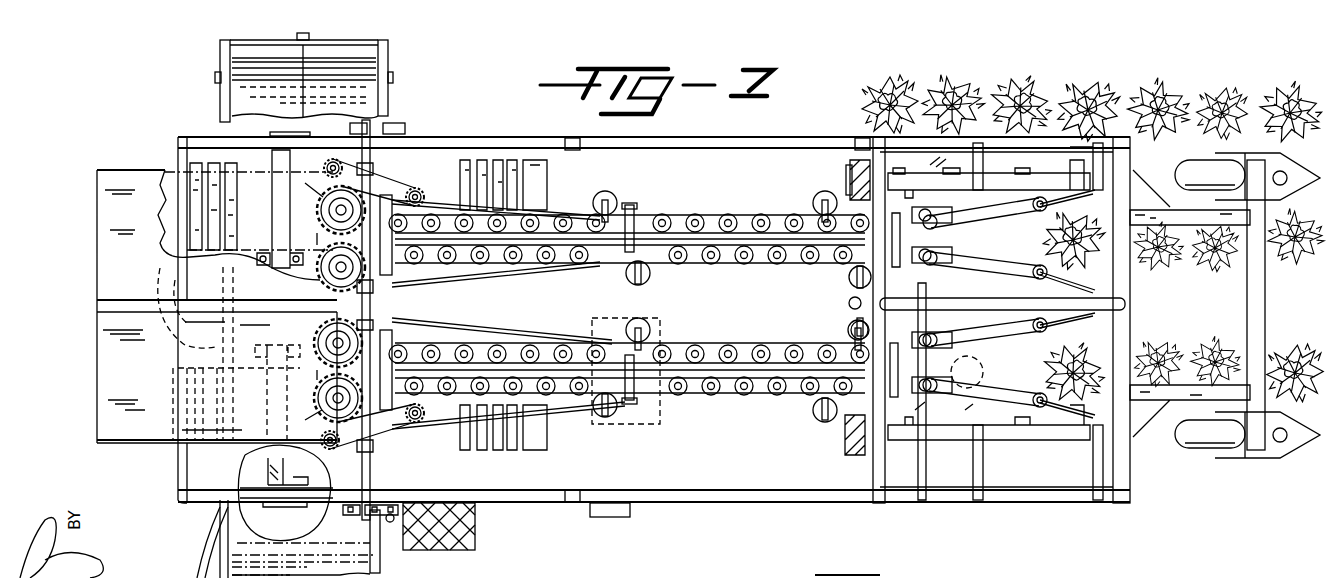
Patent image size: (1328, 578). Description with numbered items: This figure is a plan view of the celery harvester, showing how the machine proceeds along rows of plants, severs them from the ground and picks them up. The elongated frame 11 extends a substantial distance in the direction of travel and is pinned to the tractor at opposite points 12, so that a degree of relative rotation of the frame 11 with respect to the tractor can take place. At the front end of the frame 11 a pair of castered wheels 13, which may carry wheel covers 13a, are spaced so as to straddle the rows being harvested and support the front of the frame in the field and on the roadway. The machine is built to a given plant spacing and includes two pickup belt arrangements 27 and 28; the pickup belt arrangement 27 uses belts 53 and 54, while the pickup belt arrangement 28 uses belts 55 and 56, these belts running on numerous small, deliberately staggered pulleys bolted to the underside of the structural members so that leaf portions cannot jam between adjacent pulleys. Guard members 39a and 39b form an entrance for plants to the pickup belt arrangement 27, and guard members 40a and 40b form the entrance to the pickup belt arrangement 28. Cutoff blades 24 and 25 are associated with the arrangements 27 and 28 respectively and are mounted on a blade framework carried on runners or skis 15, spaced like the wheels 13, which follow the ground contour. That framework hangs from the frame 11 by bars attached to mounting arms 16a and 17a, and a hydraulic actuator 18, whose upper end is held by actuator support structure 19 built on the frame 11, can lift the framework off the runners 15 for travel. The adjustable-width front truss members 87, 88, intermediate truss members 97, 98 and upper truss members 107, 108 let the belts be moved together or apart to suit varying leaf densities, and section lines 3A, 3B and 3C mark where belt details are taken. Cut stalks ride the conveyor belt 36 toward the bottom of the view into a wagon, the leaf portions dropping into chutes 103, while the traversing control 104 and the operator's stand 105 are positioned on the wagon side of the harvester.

The frame 11 is at (787, 500).
The pinning points 12 is at (300, 126).
The castered wheels 13 is at (1180, 178).
The wheel covers 13a is at (1300, 458).
The runners or skis 15 is at (856, 160).
The mounting arm 16a is at (1098, 145).
The mounting arm 17a is at (978, 143).
The actuator 18 is at (852, 308).
The actuator support structure 19 is at (962, 305).
The cutoff blade 24 is at (925, 262).
The cutoff blade 25 is at (940, 402).
The pickup belt arrangement 27 is at (733, 228).
The pickup belt arrangement 28 is at (733, 375).
The conveyor belt 36 is at (242, 530).
The guard member 39a is at (1090, 196).
The guard member 39b is at (1090, 290).
The guard member 40a is at (1072, 333).
The guard member 40b is at (1052, 405).
The belt 53 is at (468, 203).
The belt 54 is at (488, 278).
The belt 55 is at (470, 325).
The belt 56 is at (455, 418).
The front truss member 87 is at (848, 186).
The front truss member 88 is at (893, 343).
The intermediate truss member 97 is at (633, 207).
The intermediate truss member 98 is at (633, 400).
The chute 103 is at (108, 345).
The control 104 is at (390, 523).
The stand 105 is at (452, 550).
The upper truss member 107 is at (398, 188).
The upper truss member 108 is at (395, 420).
The section line 3A is at (660, 425).
The section line 3B is at (985, 372).
The section line 3C is at (300, 530).